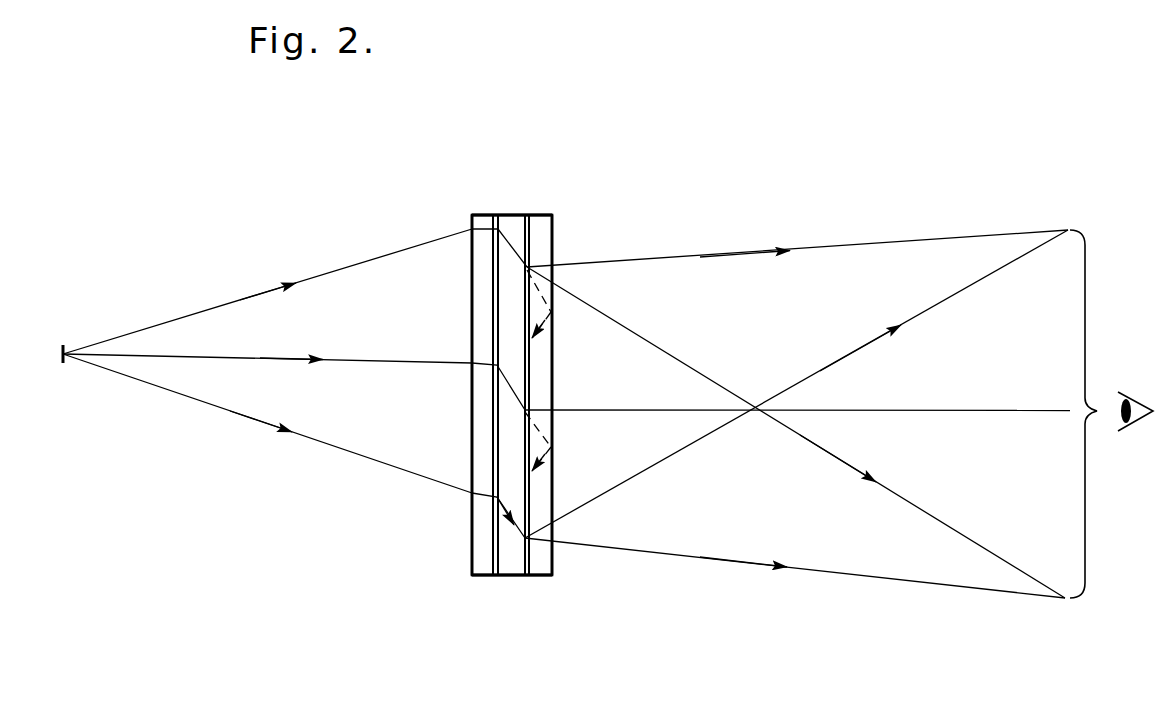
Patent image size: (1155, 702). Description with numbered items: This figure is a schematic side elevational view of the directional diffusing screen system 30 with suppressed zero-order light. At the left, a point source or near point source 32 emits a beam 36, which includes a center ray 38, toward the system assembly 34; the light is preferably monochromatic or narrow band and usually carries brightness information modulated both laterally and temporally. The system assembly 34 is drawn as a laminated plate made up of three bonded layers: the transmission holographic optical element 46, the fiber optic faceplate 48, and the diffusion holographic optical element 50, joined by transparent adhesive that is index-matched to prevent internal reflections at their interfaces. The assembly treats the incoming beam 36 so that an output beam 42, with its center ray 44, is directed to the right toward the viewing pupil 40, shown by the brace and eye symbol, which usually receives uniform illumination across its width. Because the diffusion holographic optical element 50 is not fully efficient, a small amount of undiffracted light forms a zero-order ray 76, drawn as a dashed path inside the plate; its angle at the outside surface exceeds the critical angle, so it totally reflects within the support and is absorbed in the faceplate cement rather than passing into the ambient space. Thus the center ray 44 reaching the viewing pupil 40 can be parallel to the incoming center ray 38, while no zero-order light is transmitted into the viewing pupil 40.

The directional diffusing screen system 30 is at (634, 167).
The point source 32 is at (61, 366).
The system assembly 34 is at (468, 208).
The beam 36 is at (259, 296).
The center ray 38 is at (370, 360).
The viewing pupil 40 is at (1088, 328).
The beam 42 is at (637, 263).
The center ray 44 is at (927, 410).
The transmission holographic optical element 46 is at (469, 578).
The fiber optic faceplate 48 is at (512, 578).
The diffusion holographic optical element 50 is at (547, 578).
The zero-order ray 76 is at (536, 340).